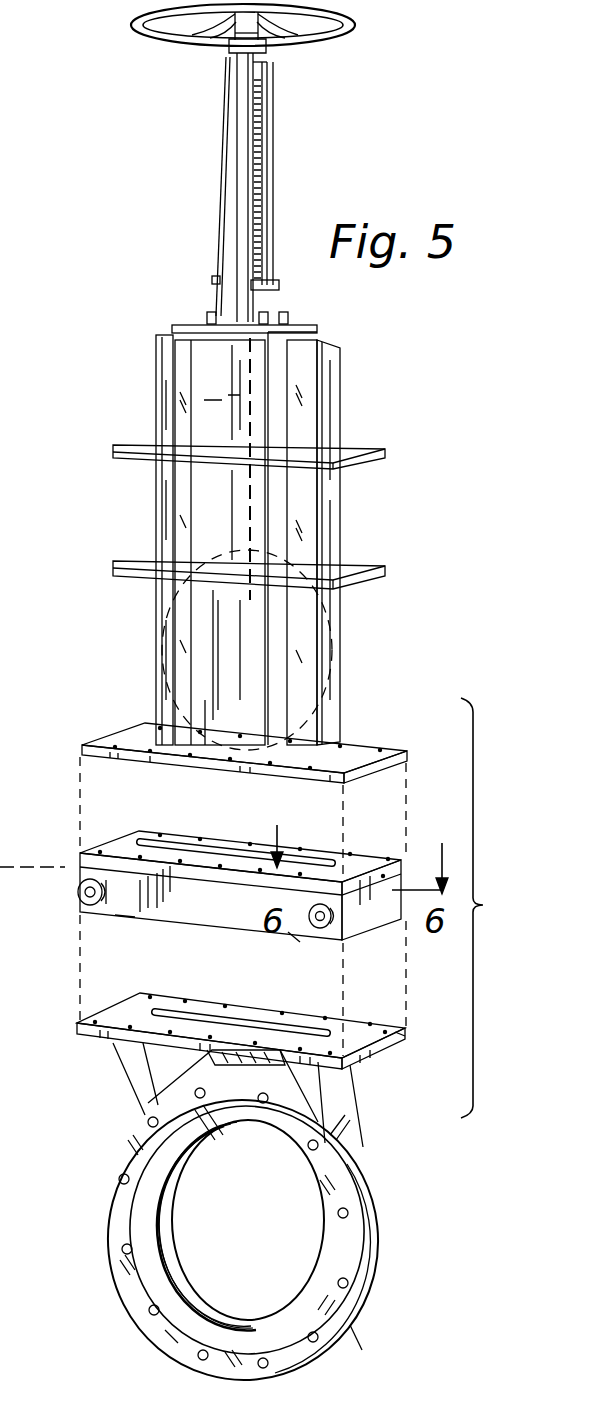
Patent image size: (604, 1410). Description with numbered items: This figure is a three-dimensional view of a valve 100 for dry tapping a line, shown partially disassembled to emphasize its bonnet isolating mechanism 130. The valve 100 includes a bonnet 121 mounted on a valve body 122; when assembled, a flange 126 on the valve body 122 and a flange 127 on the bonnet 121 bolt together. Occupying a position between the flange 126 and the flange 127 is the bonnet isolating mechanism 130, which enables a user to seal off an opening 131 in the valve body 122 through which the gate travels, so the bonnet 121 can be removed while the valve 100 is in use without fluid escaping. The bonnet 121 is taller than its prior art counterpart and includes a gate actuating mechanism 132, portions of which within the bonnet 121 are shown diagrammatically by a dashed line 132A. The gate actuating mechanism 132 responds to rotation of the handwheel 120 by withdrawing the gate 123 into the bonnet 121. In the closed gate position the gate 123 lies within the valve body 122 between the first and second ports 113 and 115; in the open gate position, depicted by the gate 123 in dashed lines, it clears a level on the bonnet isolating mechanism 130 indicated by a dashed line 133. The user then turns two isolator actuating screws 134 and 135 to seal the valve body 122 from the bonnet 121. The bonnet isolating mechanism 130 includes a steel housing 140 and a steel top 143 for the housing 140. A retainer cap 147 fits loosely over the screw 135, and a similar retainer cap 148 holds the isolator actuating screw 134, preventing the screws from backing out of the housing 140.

The valve 100 is at (146, 226).
The handwheel 120 is at (356, 30).
The gate actuating mechanism 132 is at (258, 183).
The dashed line 132A is at (165, 392).
The bonnet 121 is at (343, 423).
The gate 123 is at (150, 668).
The flange 127 is at (384, 741).
The dashed line 133 is at (52, 866).
The bonnet isolating mechanism 130 is at (389, 932).
The top 143 is at (362, 854).
The isolator actuating screw 134 is at (78, 895).
The retainer cap 148 is at (108, 882).
The housing 140 is at (127, 920).
The isolator actuating screw 135 is at (293, 938).
The retainer cap 147 is at (328, 928).
The opening 131 is at (312, 1023).
The flange 126 is at (403, 1040).
The second port 115 is at (378, 1213).
The first port 113 is at (172, 1337).
The valve body 122 is at (363, 1338).